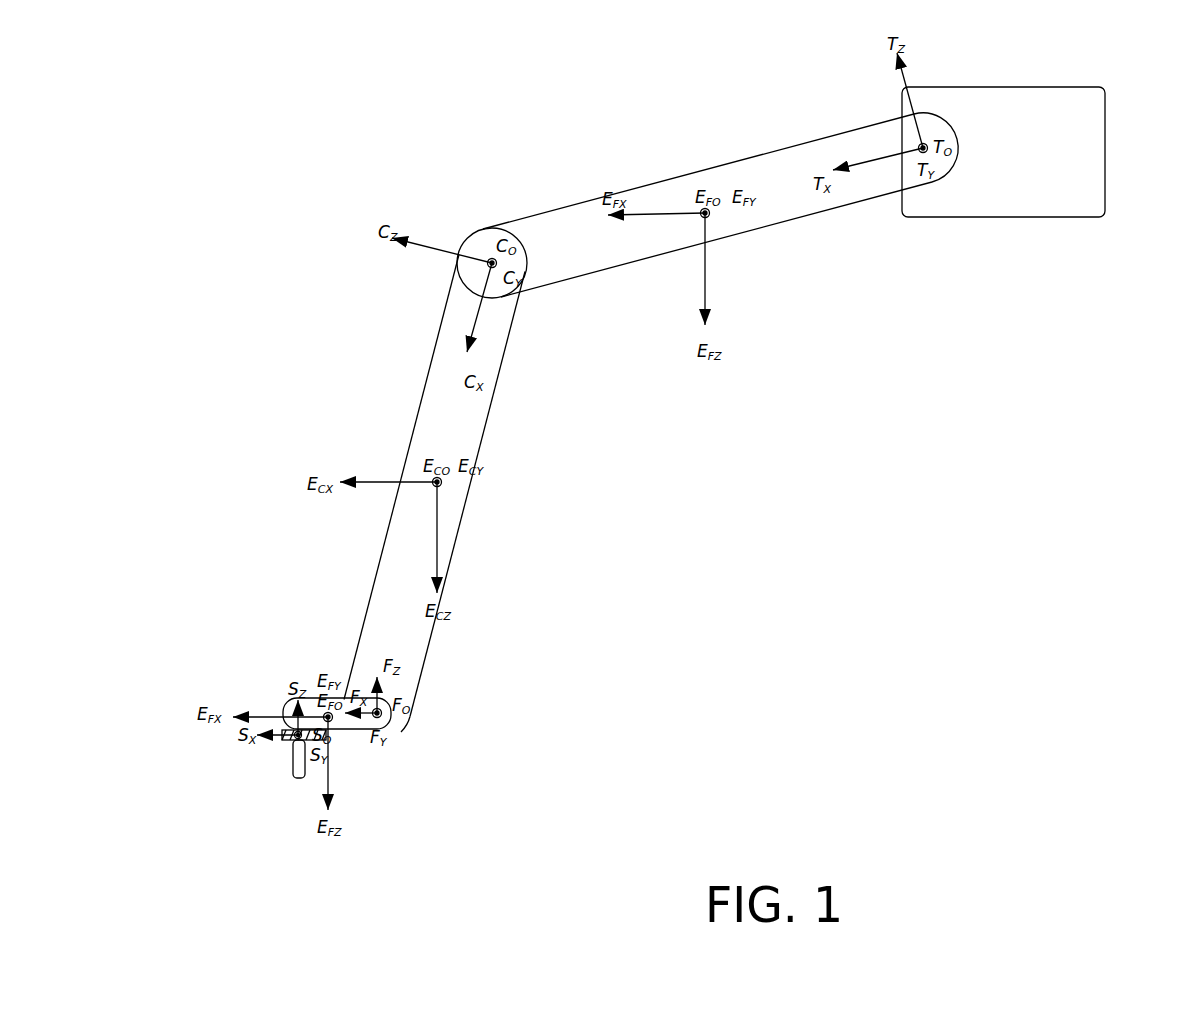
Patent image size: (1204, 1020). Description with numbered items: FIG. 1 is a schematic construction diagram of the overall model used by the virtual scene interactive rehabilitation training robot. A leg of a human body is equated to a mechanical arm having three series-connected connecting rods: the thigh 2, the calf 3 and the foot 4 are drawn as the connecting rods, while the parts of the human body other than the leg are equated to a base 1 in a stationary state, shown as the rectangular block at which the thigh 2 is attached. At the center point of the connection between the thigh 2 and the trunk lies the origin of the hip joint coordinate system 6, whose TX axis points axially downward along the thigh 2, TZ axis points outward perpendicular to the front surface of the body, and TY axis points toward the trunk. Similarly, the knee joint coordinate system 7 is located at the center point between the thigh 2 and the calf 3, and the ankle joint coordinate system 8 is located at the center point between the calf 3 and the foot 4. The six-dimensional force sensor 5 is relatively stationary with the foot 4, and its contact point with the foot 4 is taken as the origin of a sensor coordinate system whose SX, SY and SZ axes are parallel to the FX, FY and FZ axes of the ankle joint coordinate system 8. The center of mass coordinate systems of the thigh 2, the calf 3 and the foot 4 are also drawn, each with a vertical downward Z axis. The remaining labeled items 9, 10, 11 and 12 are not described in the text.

The base 1 is at (1028, 142).
The thigh 2 is at (760, 218).
The calf 3 is at (472, 438).
The foot 4 is at (290, 700).
The six-dimensional force sensor 5 is at (297, 782).
The hip joint coordinate system 6 is at (880, 143).
The knee joint coordinate system 7 is at (492, 330).
The ankle joint coordinate system 8 is at (390, 728).
The tool joint 9 is at (280, 738).
The first force sensor 10 is at (718, 298).
The second force sensor 11 is at (417, 527).
The third force sensor 12 is at (333, 750).